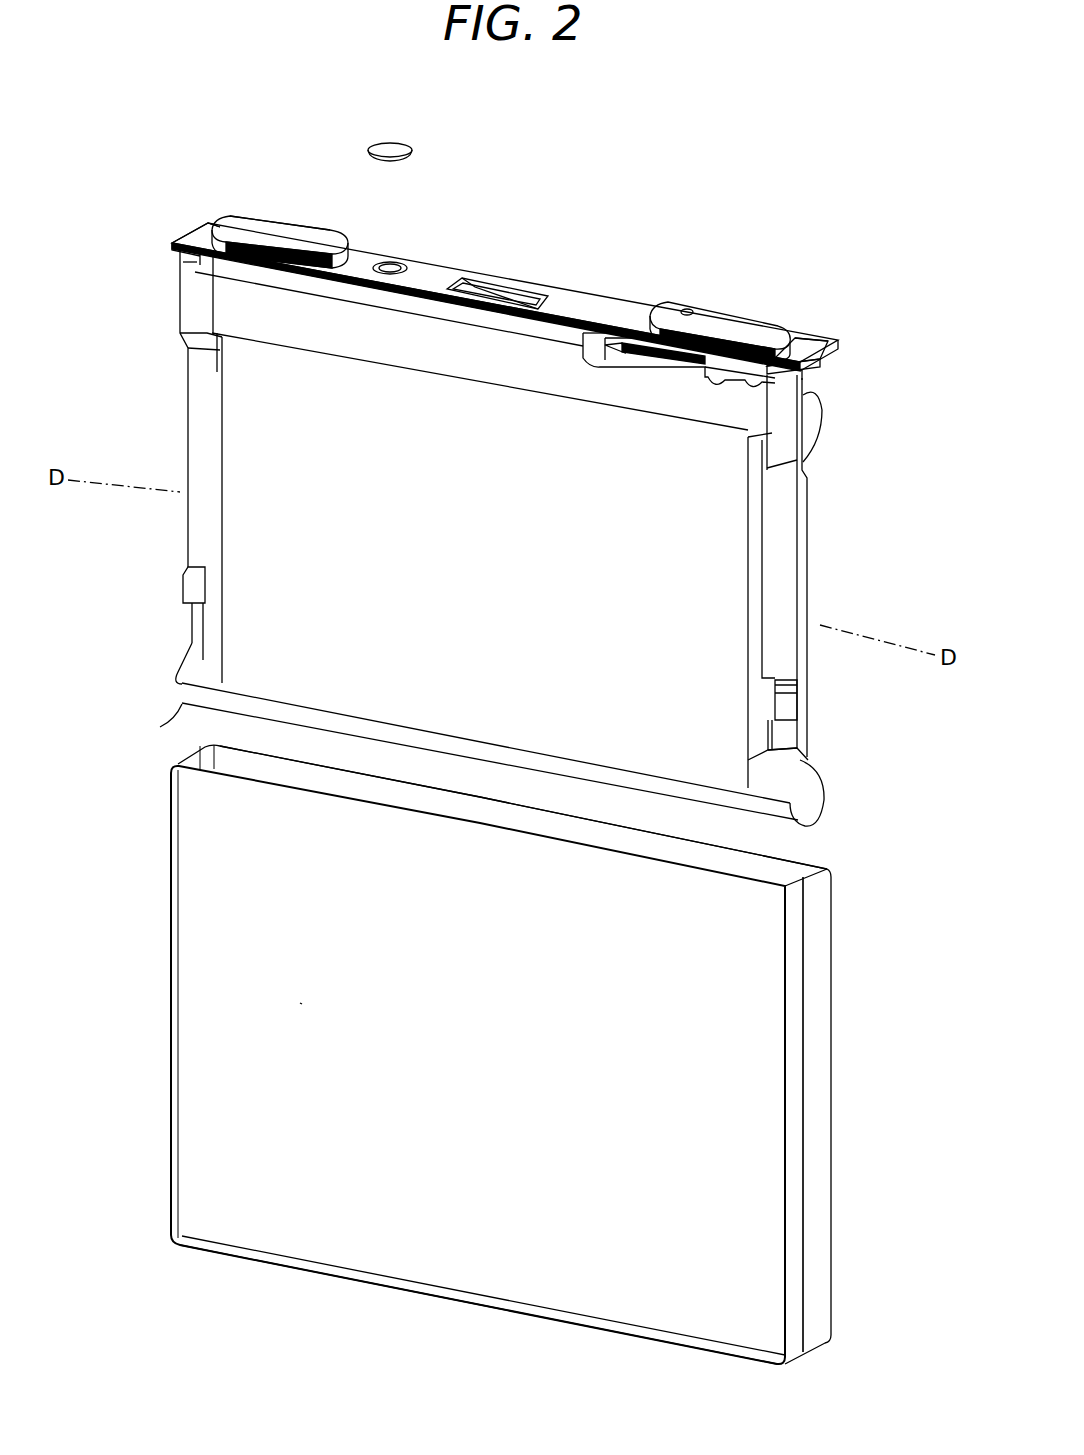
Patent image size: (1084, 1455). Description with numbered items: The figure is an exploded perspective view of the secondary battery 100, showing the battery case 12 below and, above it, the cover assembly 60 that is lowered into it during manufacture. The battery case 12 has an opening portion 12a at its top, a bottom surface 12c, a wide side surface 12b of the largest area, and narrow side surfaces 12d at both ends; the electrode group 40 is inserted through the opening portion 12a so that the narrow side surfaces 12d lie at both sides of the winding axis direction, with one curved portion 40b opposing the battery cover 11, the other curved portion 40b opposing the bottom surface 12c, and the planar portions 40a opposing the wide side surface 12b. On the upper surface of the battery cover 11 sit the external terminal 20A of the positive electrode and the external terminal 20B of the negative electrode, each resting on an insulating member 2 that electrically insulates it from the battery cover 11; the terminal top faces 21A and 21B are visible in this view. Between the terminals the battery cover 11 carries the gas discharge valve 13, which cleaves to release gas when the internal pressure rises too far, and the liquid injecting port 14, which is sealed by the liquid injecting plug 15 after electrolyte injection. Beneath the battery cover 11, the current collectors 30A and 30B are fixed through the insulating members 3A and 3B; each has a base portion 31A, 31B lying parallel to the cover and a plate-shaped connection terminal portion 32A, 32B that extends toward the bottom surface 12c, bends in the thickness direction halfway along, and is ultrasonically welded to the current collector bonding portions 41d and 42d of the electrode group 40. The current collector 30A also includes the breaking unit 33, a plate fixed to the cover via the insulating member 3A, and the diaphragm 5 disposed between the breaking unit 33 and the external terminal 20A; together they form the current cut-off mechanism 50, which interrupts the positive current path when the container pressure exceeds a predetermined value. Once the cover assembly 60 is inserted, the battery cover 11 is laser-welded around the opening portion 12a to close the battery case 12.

The secondary battery 100 is at (738, 148).
The battery cover 11 is at (598, 300).
The battery case 12 is at (848, 948).
The opening portion 12a is at (797, 856).
The wide side surface 12b is at (300, 1003).
The bottom surface 12c is at (435, 1312).
The narrow side surface 12d is at (180, 900).
The gas discharge valve 13 is at (503, 287).
The liquid injecting port 14 is at (392, 262).
The liquid injecting plug 15 is at (402, 147).
The insulating member 2 is at (200, 240).
The external terminal of the positive electrode 20A is at (792, 297).
The external terminal of the negative electrode 20B is at (247, 190).
The terminal top face 21A is at (728, 316).
The terminal top face 21B is at (290, 232).
The insulating member 3A is at (825, 370).
The insulating member 3B is at (185, 262).
The current collector of the positive electrode 30A is at (815, 425).
The current collector of the negative electrode 30B is at (178, 312).
The base portion 31A is at (822, 372).
The base portion 31B is at (168, 260).
The connection terminal portion 32A is at (775, 520).
The connection terminal portion 32B is at (205, 465).
The breaking unit 33 is at (612, 368).
The electrode group 40 is at (178, 652).
The planar portion 40a is at (650, 560).
The curved portion 40b is at (415, 345).
The current collector bonding portion 41d is at (797, 742).
The current collector bonding portion 42d is at (195, 590).
The diaphragm 5 is at (695, 388).
The current cut-off mechanism 50 is at (655, 378).
The cover assembly 60 is at (888, 308).